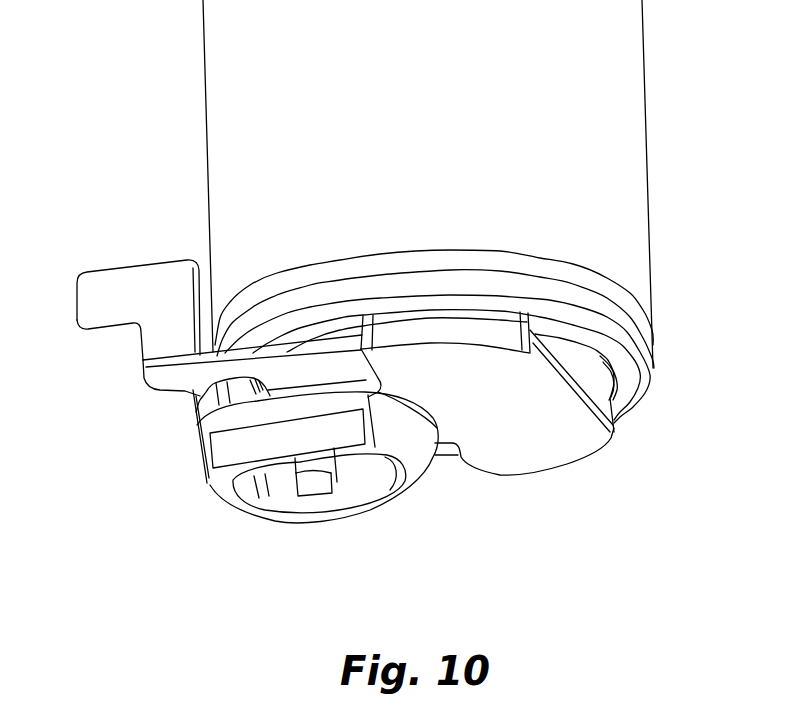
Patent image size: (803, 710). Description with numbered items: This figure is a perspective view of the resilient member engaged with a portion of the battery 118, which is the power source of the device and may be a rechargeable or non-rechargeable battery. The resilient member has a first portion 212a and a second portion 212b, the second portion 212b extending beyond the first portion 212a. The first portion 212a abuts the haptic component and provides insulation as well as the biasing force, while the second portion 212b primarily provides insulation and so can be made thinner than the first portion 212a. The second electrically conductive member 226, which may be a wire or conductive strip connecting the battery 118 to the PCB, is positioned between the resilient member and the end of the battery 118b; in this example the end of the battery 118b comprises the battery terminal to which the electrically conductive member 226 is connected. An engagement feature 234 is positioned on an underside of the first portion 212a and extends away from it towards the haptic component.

The battery 118 is at (646, 181).
The end of the battery 118b is at (653, 368).
The second electrically conductive member 226 is at (92, 324).
The first portion 212a is at (210, 483).
The second portion 212b is at (583, 443).
The engagement feature 234 is at (318, 490).